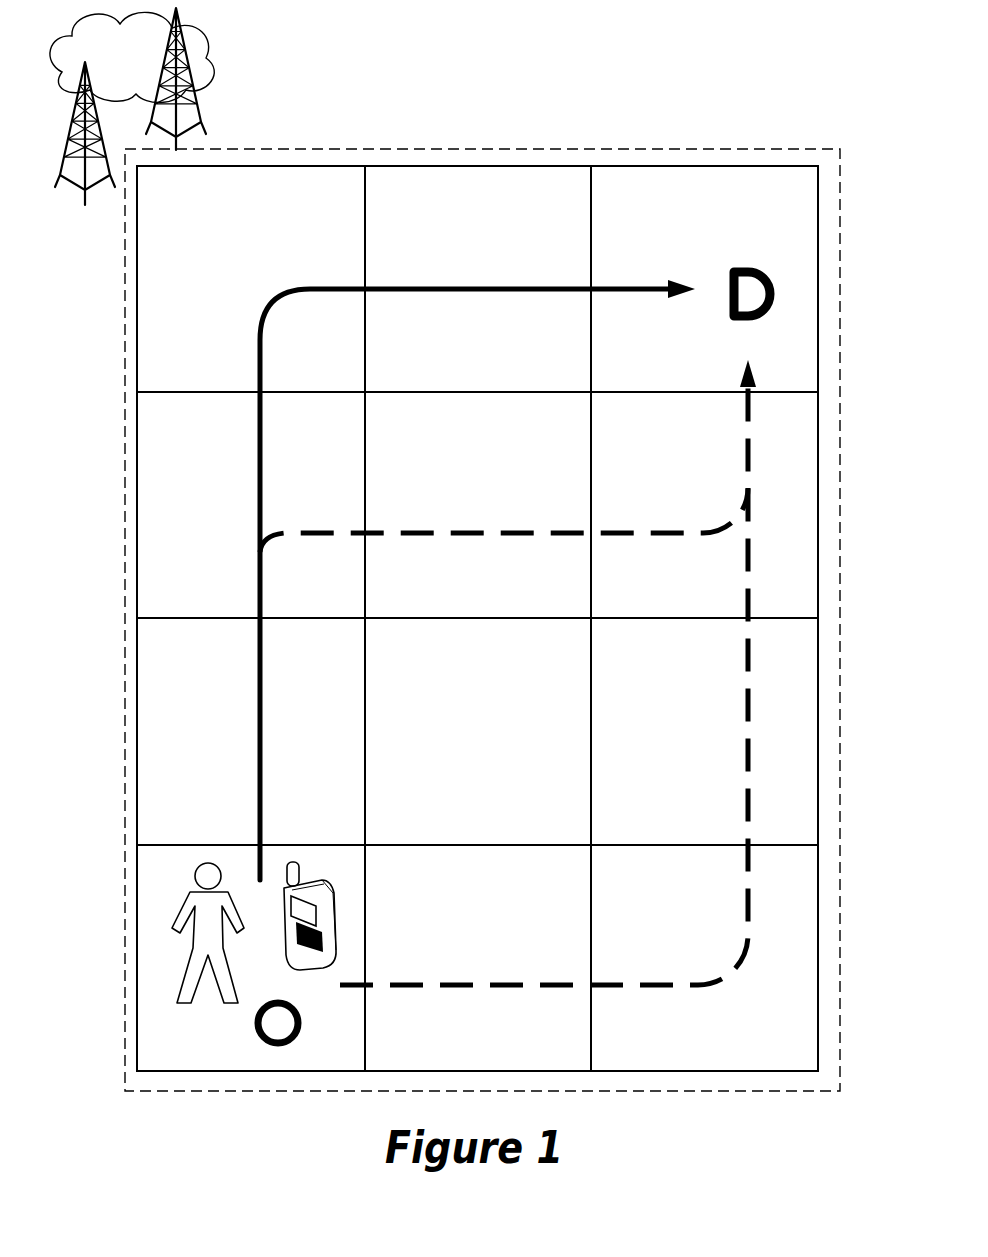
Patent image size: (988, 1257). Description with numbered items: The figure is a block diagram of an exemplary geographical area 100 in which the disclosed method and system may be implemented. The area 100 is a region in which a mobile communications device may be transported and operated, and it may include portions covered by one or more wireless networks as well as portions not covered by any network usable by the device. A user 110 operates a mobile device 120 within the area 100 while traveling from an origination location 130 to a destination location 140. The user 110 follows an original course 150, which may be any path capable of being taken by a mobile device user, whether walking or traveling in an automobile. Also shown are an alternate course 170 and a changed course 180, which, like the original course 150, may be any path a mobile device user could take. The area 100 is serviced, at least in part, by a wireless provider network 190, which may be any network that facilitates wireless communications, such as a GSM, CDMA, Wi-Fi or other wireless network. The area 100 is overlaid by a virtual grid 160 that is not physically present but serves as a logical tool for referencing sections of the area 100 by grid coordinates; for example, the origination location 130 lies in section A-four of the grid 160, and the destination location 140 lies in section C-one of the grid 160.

The area 100 is at (841, 160).
The user 110 is at (208, 946).
The mobile device 120 is at (310, 931).
The origination location 130 is at (294, 1034).
The destination location 140 is at (750, 311).
The original course 150 is at (276, 304).
The virtual grid 160 is at (819, 323).
The alternate course 170 is at (718, 983).
The changed course 180 is at (462, 535).
The wireless provider network 190 is at (132, 106).